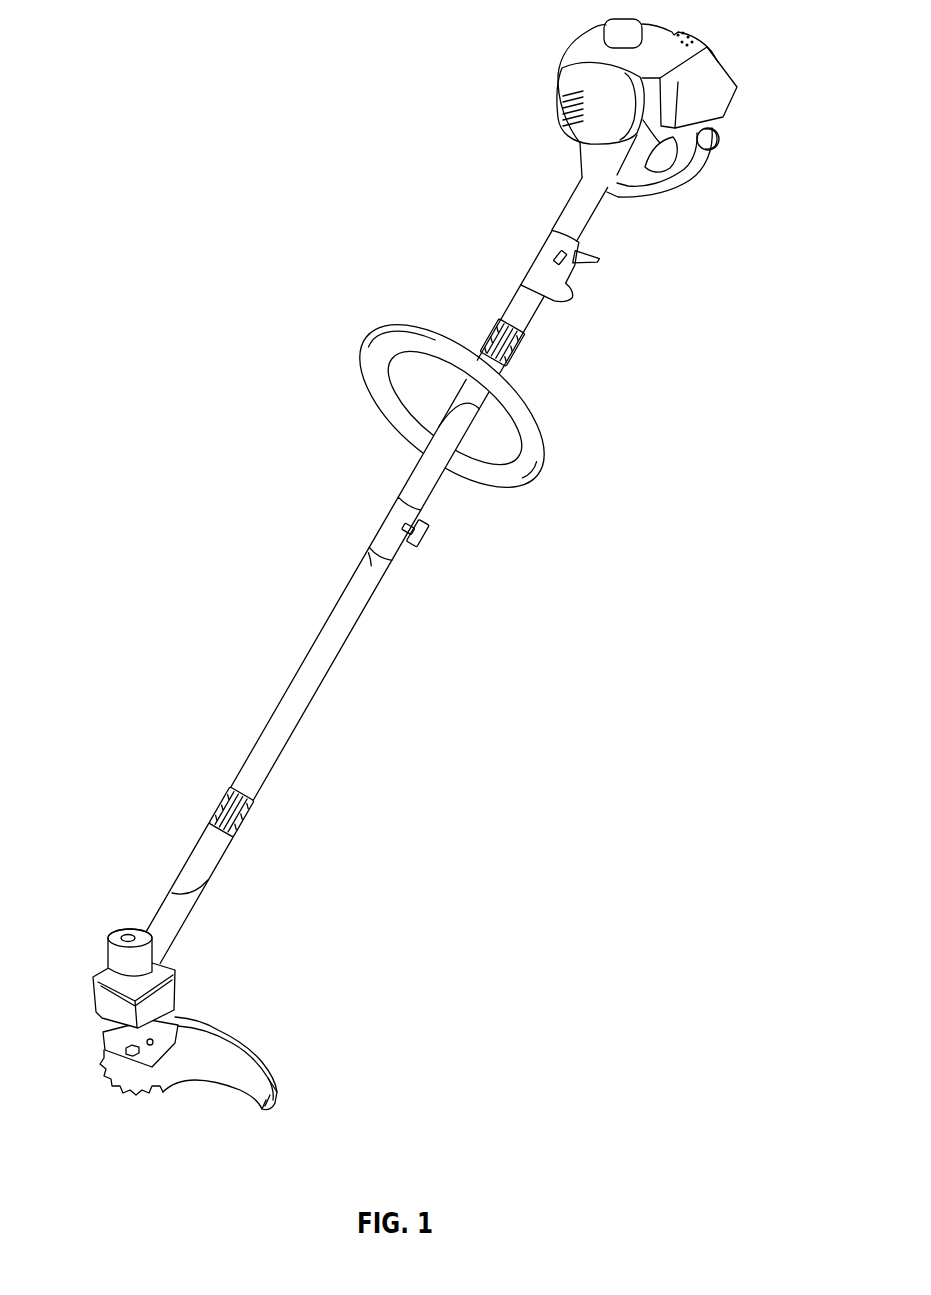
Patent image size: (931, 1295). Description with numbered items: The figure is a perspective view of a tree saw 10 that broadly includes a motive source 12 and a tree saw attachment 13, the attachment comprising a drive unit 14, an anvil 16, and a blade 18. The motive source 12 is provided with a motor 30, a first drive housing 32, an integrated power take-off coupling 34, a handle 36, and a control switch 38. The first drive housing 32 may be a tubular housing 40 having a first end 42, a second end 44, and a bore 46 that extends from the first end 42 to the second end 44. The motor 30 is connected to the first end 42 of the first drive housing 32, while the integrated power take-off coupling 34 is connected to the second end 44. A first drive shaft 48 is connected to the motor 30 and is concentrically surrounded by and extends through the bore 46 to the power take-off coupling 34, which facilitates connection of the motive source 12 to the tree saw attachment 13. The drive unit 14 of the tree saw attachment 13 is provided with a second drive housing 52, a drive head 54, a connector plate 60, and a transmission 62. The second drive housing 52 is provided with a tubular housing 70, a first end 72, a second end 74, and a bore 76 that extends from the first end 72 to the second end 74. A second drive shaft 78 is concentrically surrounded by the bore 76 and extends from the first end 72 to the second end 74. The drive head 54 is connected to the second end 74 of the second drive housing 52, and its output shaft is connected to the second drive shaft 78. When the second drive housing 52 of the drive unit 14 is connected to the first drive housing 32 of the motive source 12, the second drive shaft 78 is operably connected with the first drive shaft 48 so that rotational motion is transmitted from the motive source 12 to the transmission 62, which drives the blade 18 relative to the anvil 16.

The tree saw 10 is at (306, 339).
The motive source 12 is at (489, 145).
The tree saw attachment 13 is at (217, 661).
The drive unit 14 is at (412, 659).
The anvil 16 is at (277, 1093).
The blade 18 is at (260, 1057).
The motor 30 is at (722, 63).
The first drive housing 32 is at (530, 330).
The integrated power take-off coupling 34 is at (400, 553).
The handle 36 is at (574, 300).
The control switch 38 is at (596, 257).
The tubular housing 40 is at (503, 368).
The first end 42 is at (580, 196).
The second end 44 is at (418, 503).
The bore 46 is at (492, 334).
The first drive shaft 48 is at (495, 327).
The second drive housing 52 is at (318, 638).
The drive head 54 is at (117, 934).
The connector plate 60 is at (97, 975).
The transmission 62 is at (178, 990).
The tubular housing 70 is at (285, 748).
The first end 72 is at (383, 557).
The second end 74 is at (208, 880).
The bore 76 is at (227, 798).
The second drive shaft 78 is at (228, 788).